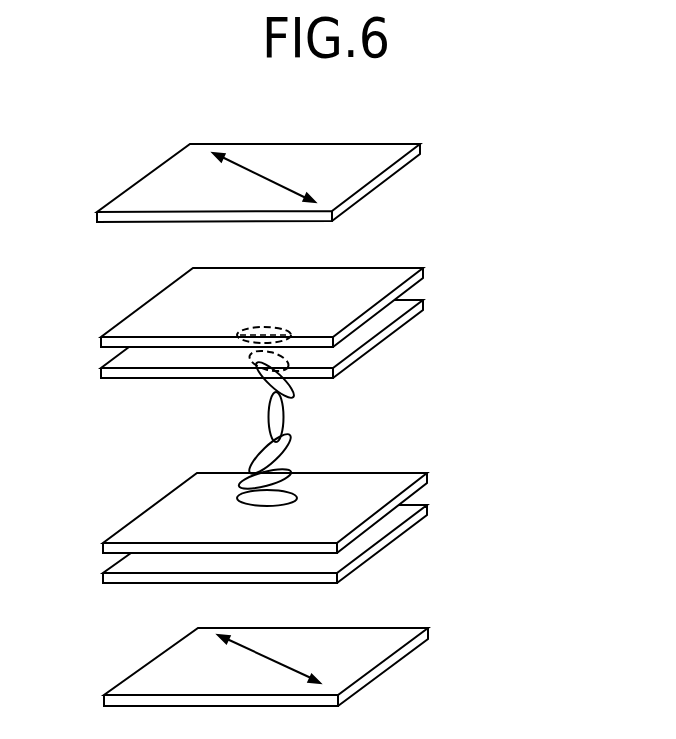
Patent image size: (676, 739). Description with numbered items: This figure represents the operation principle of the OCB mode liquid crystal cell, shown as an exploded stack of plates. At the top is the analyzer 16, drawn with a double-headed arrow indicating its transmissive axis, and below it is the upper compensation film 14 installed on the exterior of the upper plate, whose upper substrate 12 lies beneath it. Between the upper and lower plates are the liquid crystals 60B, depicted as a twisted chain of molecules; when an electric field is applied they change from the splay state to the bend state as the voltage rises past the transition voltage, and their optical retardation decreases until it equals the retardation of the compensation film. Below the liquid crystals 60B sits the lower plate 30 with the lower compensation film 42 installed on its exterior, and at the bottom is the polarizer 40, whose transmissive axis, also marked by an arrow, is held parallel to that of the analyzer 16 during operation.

The analyzer 16 is at (420, 147).
The upper compensation film 14 is at (423, 269).
The upper substrate 12 is at (423, 301).
The liquid crystals 60B is at (283, 420).
The lower plate 30 is at (427, 474).
The lower compensation film 42 is at (427, 506).
The polarizer 40 is at (428, 629).